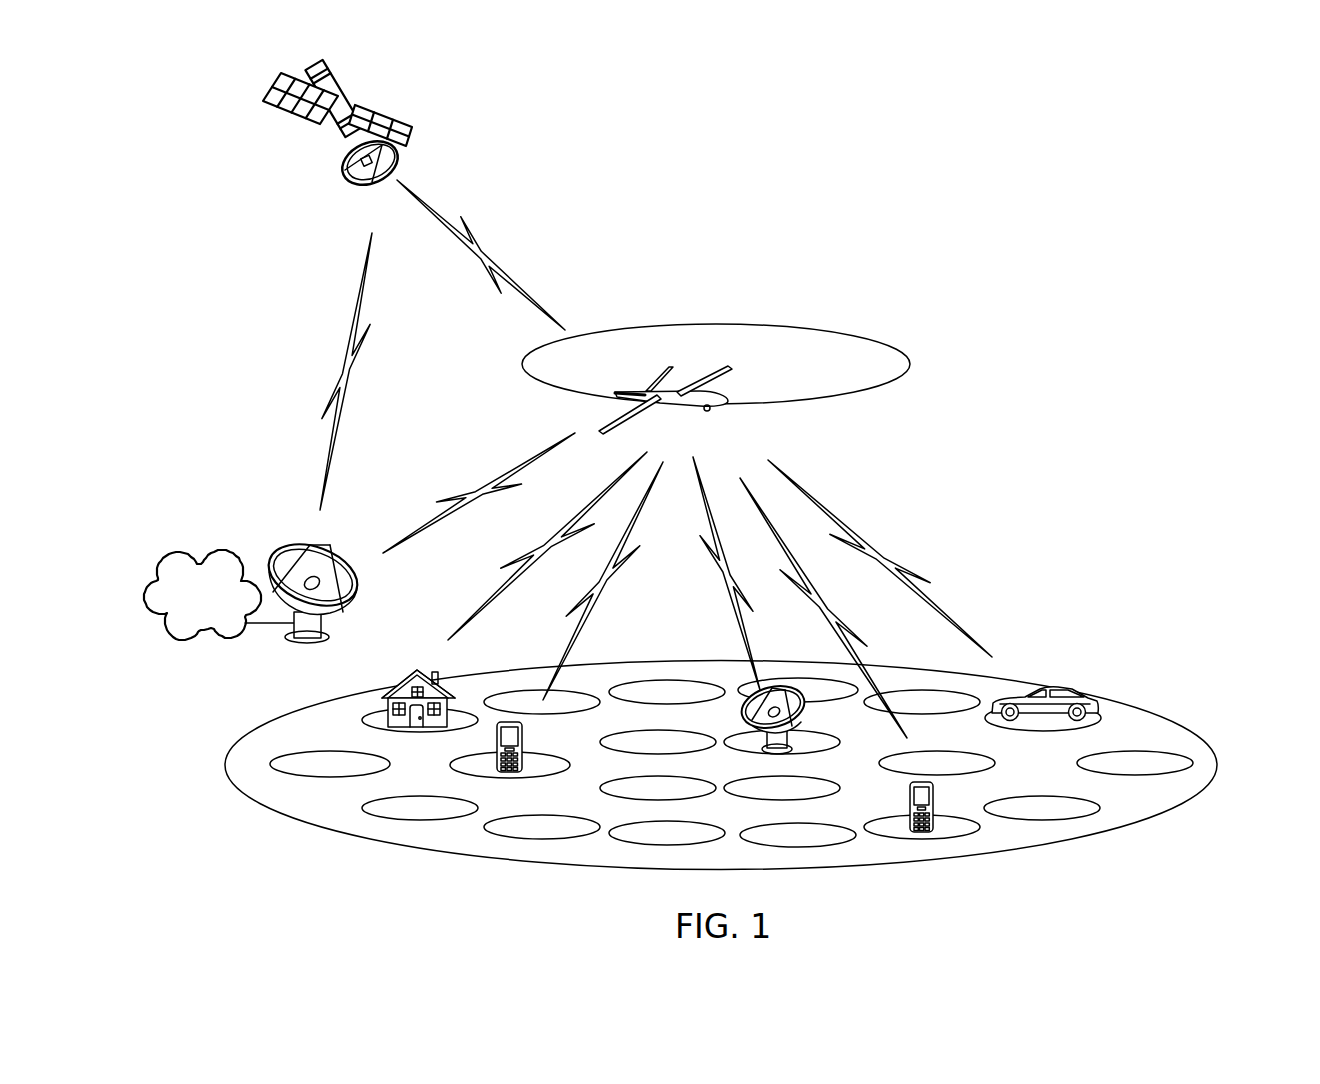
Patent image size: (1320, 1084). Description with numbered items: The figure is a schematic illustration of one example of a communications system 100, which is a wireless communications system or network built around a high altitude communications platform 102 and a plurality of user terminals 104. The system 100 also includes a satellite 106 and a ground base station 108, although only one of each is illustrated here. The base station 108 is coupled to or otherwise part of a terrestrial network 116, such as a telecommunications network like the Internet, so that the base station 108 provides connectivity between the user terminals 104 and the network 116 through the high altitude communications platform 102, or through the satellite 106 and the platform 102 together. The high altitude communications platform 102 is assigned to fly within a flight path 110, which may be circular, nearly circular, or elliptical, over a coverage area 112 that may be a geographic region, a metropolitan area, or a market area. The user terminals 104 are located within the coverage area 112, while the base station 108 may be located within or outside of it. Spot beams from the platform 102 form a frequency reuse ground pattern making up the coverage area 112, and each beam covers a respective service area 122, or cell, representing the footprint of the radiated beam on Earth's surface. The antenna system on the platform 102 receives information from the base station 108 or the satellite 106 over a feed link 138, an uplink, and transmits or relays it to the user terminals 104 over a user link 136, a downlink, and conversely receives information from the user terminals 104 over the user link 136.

The communications system 100 is at (1071, 286).
The high altitude communications platform 102 is at (722, 405).
The user terminals 104 is at (410, 680).
The satellite 106 is at (413, 134).
The ground base station 108 is at (292, 552).
The flight path 110 is at (910, 365).
The coverage area 112 is at (1218, 765).
The terrestrial network 116 is at (190, 641).
The service area 122 is at (372, 712).
The user link 136 is at (687, 585).
The feed link 138 is at (395, 345).